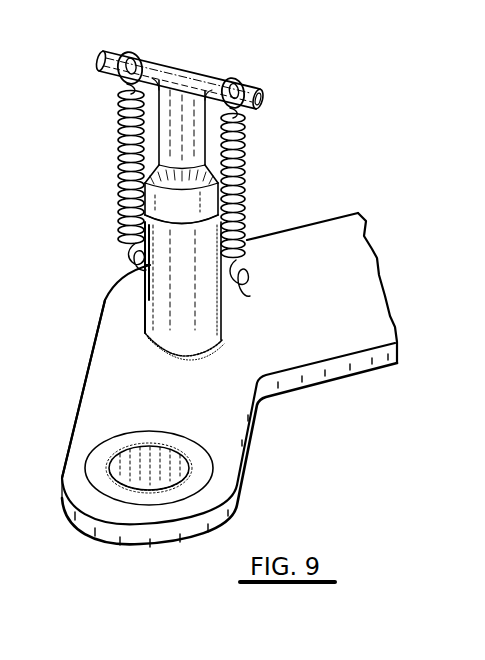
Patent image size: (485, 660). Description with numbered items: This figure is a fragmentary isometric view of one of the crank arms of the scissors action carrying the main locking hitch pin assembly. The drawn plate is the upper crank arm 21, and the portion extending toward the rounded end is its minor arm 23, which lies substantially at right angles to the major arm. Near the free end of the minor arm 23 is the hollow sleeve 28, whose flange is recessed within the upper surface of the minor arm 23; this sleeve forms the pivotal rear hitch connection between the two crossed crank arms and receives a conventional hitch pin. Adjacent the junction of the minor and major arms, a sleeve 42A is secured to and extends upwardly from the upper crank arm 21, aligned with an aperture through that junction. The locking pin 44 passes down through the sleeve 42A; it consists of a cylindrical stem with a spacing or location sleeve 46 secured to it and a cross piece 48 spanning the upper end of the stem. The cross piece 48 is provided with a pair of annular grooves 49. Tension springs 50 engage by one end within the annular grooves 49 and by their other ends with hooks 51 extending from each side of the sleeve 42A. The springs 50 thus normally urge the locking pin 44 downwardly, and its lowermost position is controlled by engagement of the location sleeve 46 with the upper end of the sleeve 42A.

The upper crank arm 21 is at (330, 350).
The minor arm 23 is at (95, 412).
The hollow sleeve 28 is at (152, 440).
The sleeve 42A is at (182, 343).
The locking pin 44 is at (140, 137).
The spacing or location sleeve 46 is at (178, 215).
The cross piece 48 is at (208, 83).
The annular grooves 49 is at (136, 70).
The tension springs 50 is at (118, 184).
The hooks 51 is at (248, 296).